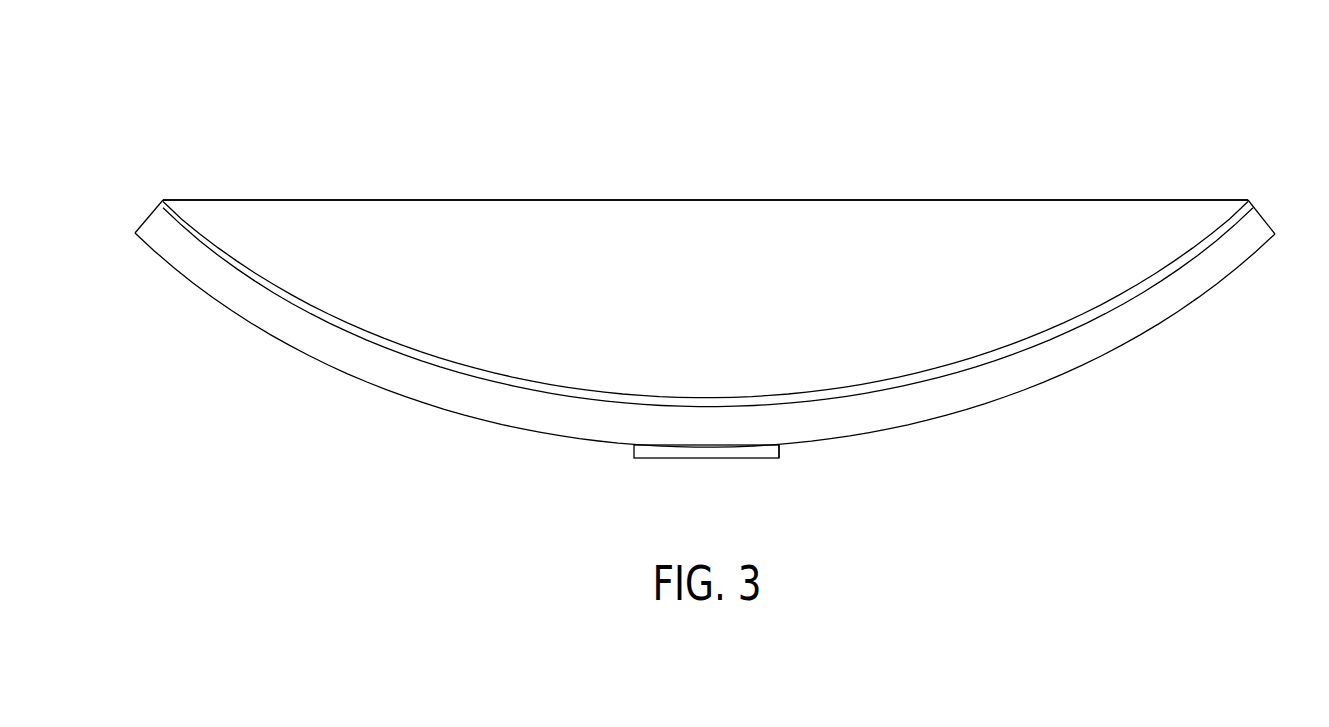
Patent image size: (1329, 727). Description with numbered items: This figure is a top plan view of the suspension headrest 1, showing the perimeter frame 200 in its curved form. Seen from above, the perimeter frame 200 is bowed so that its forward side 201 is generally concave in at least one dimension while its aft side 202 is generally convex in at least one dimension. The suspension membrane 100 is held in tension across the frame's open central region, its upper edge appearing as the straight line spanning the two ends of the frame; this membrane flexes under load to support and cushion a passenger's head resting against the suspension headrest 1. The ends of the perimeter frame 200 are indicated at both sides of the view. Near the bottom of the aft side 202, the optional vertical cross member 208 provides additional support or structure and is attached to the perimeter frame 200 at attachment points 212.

The suspension headrest 1 is at (1014, 105).
The suspension membrane 100 is at (809, 196).
The perimeter frame 200 is at (153, 230).
The forward side 201 is at (240, 263).
The aft side 202 is at (240, 318).
The vertical cross member 208 is at (708, 452).
The attachment points 212 is at (780, 458).